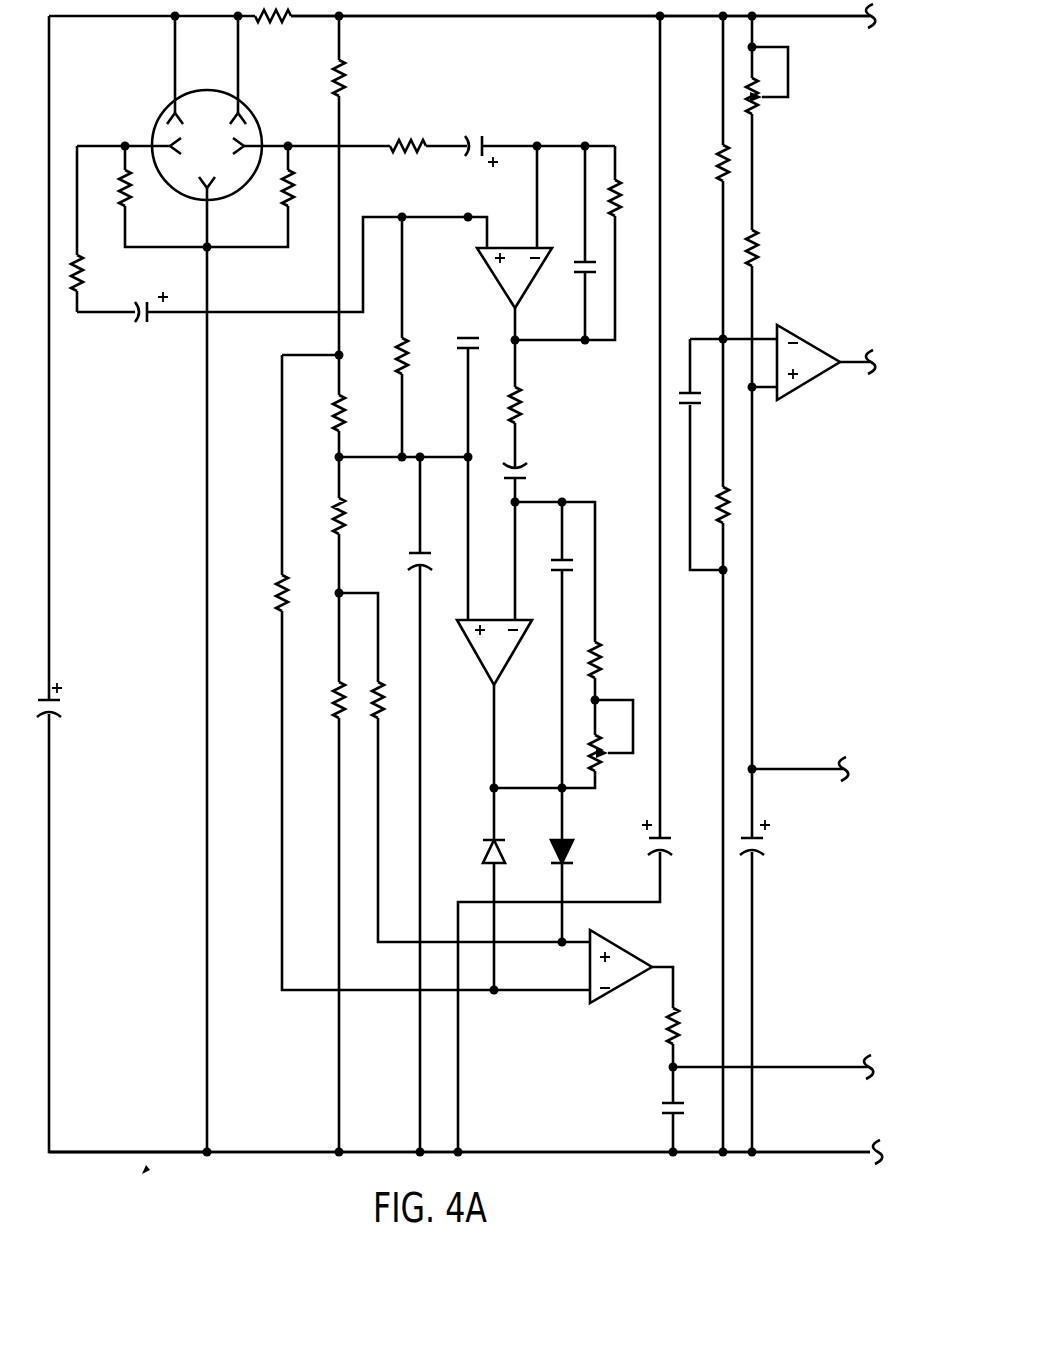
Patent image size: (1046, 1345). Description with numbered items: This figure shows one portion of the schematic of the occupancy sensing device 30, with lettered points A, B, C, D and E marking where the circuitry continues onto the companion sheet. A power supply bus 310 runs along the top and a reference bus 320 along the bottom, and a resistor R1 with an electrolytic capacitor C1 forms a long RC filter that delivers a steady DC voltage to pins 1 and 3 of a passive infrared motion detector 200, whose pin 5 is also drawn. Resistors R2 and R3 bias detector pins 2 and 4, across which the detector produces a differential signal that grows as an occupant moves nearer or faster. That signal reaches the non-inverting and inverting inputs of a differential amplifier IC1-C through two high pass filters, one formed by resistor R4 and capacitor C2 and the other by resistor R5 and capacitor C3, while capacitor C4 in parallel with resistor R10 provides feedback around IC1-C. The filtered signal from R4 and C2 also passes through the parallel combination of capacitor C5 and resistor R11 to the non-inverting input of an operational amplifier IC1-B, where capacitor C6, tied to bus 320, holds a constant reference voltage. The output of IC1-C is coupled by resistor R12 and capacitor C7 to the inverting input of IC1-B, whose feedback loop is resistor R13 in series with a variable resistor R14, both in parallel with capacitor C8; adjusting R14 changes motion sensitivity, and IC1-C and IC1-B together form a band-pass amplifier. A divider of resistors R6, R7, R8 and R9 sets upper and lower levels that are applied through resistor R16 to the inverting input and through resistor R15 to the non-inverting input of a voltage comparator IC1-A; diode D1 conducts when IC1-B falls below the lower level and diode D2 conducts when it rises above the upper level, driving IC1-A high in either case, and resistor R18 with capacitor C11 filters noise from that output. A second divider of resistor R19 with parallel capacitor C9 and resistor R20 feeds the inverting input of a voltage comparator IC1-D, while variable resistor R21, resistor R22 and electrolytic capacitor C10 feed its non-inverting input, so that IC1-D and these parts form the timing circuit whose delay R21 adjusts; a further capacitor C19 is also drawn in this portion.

The motion detector 200 is at (162, 108).
The pin 1 is at (183, 121).
The pin 2 is at (173, 159).
The pin 3 is at (230, 121).
The pin 4 is at (238, 157).
The connector pin 5 is at (214, 183).
The power supply bus 310 is at (562, 22).
The reference bus 320 is at (572, 1150).
The device 30 is at (146, 1166).
The resistor R1 is at (273, 32).
The resistor R2 is at (109, 176).
The resistor R3 is at (301, 178).
The resistor R4 is at (92, 229).
The resistor R5 is at (408, 134).
The resistor R6 is at (324, 56).
The resistor R7 is at (322, 413).
The resistor R8 is at (322, 516).
The resistor R9 is at (321, 700).
The resistor R10 is at (633, 198).
The resistor R11 is at (381, 295).
The resistor R12 is at (536, 405).
The resistor R13 is at (614, 660).
The variable resistor R14 is at (612, 764).
The resistor R15 is at (396, 700).
The resistor R16 is at (260, 483).
The resistor R18 is at (651, 1026).
The resistor R19 is at (701, 163).
The resistor R20 is at (727, 494).
The variable resistor R21 is at (772, 107).
The resistor R22 is at (772, 248).
The capacitor C1 is at (64, 703).
The capacitor C2 is at (122, 323).
The capacitor C3 is at (480, 138).
The capacitor C4 is at (573, 251).
The capacitor C5 is at (451, 347).
The capacitor C6 is at (401, 564).
The capacitor C7 is at (532, 477).
The capacitor C8 is at (547, 569).
The capacitor C9 is at (683, 386).
The capacitor C10 is at (775, 842).
The capacitor C11 is at (653, 1114).
The capacitor C19 is at (678, 841).
The diode D1 is at (476, 853).
The diode D2 is at (578, 853).
The voltage comparator IC1-A is at (647, 961).
The operational amplifier IC1-B is at (475, 650).
The differential amplifier IC1-C is at (531, 280).
The voltage comparator IC1-D is at (810, 388).
The terminal A is at (858, 36).
The terminal B is at (851, 358).
The terminal C is at (826, 762).
The terminal D is at (822, 1063).
The terminal E is at (820, 1147).